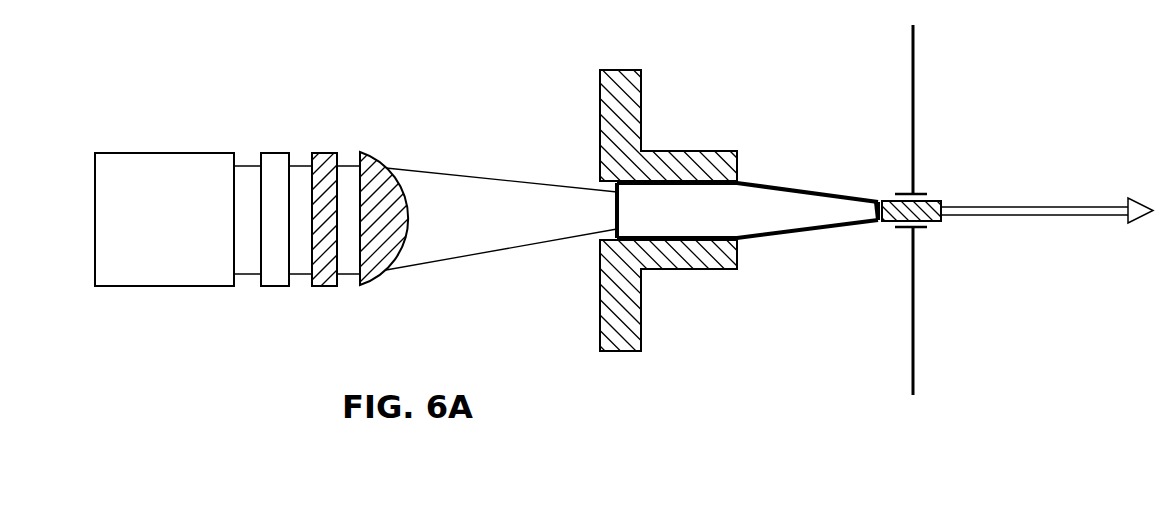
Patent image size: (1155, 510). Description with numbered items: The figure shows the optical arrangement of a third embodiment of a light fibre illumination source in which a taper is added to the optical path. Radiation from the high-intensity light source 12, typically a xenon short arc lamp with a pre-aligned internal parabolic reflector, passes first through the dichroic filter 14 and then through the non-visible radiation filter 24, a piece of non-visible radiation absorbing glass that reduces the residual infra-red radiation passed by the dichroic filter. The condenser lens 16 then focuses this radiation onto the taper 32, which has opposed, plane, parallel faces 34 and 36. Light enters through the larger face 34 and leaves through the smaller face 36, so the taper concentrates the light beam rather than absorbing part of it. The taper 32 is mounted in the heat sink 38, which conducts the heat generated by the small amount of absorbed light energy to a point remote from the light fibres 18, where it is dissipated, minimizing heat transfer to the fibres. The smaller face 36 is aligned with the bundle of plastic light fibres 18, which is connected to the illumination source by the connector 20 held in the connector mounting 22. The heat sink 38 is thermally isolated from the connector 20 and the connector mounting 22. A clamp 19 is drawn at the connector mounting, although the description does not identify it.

The high-intensity light source 12 is at (170, 252).
The dichroic filter 14 is at (272, 288).
The non-visible radiation filter 24 is at (325, 288).
The condenser lens 16 is at (370, 287).
The heat sink 38 is at (618, 70).
The taper 32 is at (815, 233).
The face 34 is at (617, 210).
The face 36 is at (877, 208).
The connector 20 is at (940, 221).
The connector mounting 22 is at (914, 47).
The clamp / mounting flange 19 is at (923, 193).
The light fibres 18 is at (1089, 203).